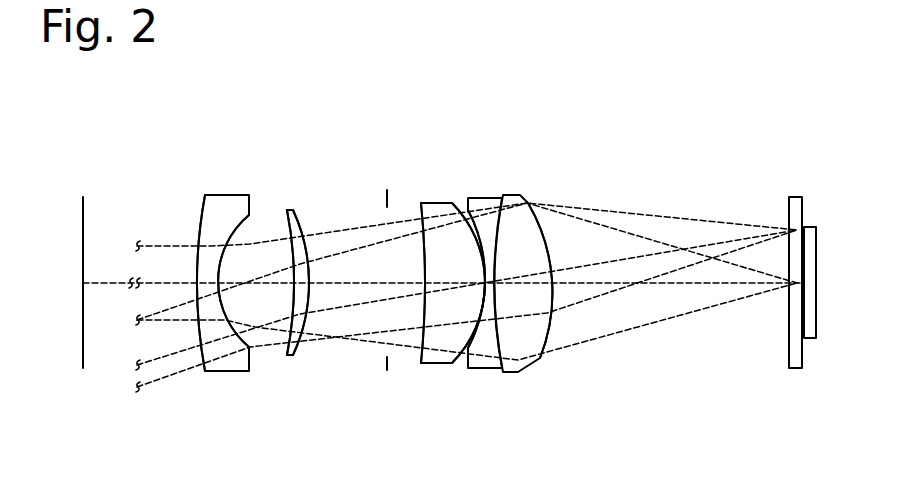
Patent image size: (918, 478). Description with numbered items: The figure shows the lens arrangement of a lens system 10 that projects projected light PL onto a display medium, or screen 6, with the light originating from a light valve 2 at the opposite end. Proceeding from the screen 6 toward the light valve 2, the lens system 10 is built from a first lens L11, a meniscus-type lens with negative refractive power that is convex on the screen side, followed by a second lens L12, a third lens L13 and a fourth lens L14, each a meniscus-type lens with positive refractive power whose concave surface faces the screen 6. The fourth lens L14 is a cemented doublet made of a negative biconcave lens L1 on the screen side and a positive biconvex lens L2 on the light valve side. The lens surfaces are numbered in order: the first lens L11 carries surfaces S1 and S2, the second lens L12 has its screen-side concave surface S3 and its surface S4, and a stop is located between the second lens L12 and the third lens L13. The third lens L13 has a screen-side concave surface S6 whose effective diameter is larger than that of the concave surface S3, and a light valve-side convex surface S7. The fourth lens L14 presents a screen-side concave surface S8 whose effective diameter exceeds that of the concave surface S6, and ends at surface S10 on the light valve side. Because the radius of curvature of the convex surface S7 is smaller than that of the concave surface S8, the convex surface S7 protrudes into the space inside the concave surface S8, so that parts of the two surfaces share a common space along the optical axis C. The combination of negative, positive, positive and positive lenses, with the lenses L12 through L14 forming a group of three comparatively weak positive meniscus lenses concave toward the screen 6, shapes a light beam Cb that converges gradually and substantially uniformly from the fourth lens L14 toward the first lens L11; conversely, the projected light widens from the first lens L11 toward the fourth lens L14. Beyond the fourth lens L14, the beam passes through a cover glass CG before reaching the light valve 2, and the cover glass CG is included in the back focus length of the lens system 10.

The light valve 2 is at (810, 233).
The display medium (screen) 6 is at (83, 215).
The lens system 10 is at (339, 158).
The projected light PL is at (158, 246).
The optical axis C is at (665, 283).
The light beam Cb is at (333, 225).
The first lens L11 is at (222, 205).
The second lens L12 is at (290, 213).
The third lens L13 is at (443, 208).
The fourth lens L14 is at (565, 102).
The negative biconcave lens L1 is at (485, 203).
The positive biconvex lens L2 is at (510, 197).
The aperture stop is at (387, 188).
The cover glass CG is at (795, 202).
The lens surface S1 is at (206, 324).
The lens surface S2 is at (244, 336).
The concave surface (screen-side surface) of the second lens S3 is at (290, 300).
The lens surface S4 is at (311, 302).
The concave surface (screen-side surface) of the third lens S6 is at (422, 305).
The convex surface (light valve-side surface) of the third lens S7 is at (476, 307).
The concave surface (screen-side surface) of the fourth lens S8 is at (473, 338).
The lens surface S10 is at (545, 324).